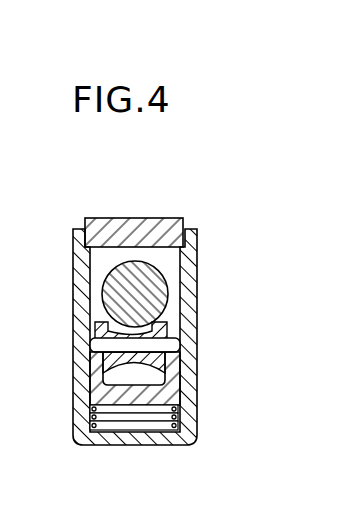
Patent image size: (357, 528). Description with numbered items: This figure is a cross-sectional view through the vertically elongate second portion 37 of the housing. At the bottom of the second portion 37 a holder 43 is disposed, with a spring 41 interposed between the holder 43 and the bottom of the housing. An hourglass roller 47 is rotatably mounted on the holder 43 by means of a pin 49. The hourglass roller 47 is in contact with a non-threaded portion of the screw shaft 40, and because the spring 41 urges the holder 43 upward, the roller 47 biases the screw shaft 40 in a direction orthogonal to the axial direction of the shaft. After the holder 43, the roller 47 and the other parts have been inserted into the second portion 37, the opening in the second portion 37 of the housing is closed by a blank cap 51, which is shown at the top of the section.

The second portion of the housing 37 is at (73, 437).
The blank cap 51 is at (160, 218).
The screw shaft 40 is at (160, 293).
The hourglass roller 47 is at (120, 323).
The pin 49 is at (90, 346).
The holder 43 is at (170, 378).
The spring 41 is at (141, 420).